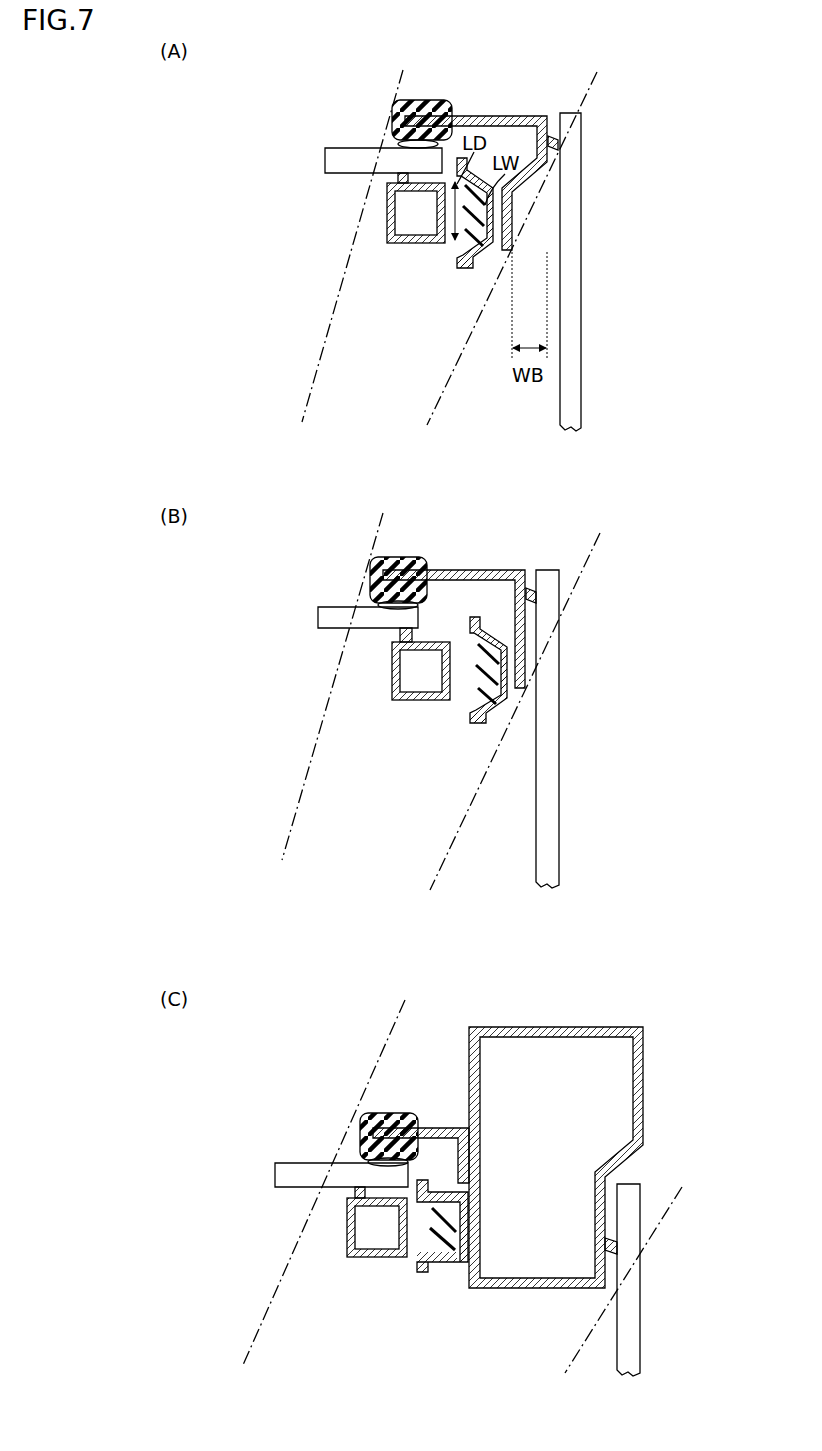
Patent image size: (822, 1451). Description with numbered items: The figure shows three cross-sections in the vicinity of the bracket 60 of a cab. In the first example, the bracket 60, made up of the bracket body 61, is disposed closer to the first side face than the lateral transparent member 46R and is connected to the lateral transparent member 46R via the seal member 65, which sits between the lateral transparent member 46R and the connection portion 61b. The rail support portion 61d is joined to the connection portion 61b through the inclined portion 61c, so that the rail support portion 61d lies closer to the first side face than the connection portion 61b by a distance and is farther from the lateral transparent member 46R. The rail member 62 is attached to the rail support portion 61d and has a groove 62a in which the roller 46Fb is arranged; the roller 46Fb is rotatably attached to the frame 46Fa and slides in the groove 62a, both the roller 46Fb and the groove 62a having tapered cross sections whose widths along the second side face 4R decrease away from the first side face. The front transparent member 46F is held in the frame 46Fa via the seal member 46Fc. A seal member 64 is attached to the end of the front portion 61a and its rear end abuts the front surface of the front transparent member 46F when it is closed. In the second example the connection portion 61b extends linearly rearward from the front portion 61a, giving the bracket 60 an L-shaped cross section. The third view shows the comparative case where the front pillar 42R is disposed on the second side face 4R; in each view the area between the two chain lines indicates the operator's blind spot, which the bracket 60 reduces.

In FIG. 7A, the bracket 60 is at (546, 146).
In FIG. 7B, the bracket 60 is at (546, 596).
In FIG. 7C, the bracket 60 is at (440, 1128).
In FIG. 7A, the bracket body 61 is at (546, 169).
In FIG. 7B, the bracket body 61 is at (546, 620).
In FIG. 7A, the front portion 61a is at (548, 116).
In FIG. 7B, the front portion 61a is at (525, 570).
In FIG. 7A, the connection portion 61b is at (540, 158).
In FIG. 7B, the connection portion 61b is at (518, 635).
In FIG. 7A, the inclined portion 61c is at (520, 180).
In FIG. 7A, the rail support portion 61d is at (573, 219).
In FIG. 7A, the rail member 62 is at (454, 230).
In FIG. 7B, the rail member 62 is at (432, 689).
In FIG. 7C, the rail member 62 is at (328, 1258).
In FIG. 7A, the groove of the rail member 62a is at (492, 244).
In FIG. 7B, the groove of the rail member 62a is at (505, 700).
In FIG. 7C, the groove of the rail member 62a is at (452, 1266).
In FIG. 7A, the seal member 64 is at (400, 130).
In FIG. 7B, the seal member 64 is at (378, 583).
In FIG. 7C, the seal member 64 is at (368, 1140).
In FIG. 7A, the seal member 65 is at (548, 143).
In FIG. 7B, the seal member 65 is at (528, 598).
In FIG. 7C, the seal member 65 is at (618, 1248).
In FIG. 7A, the front transparent member 46F is at (345, 168).
In FIG. 7B, the front transparent member 46F is at (340, 626).
In FIG. 7C, the front transparent member 46F is at (290, 1176).
In FIG. 7A, the frame 46Fa is at (387, 216).
In FIG. 7B, the frame 46Fa is at (392, 675).
In FIG. 7C, the frame 46Fa is at (347, 1232).
In FIG. 7A, the roller 46Fb is at (458, 254).
In FIG. 7B, the roller 46Fb is at (472, 710).
In FIG. 7C, the roller 46Fb is at (420, 1250).
In FIG. 7A, the seal member 46Fc is at (400, 178).
In FIG. 7B, the seal member 46Fc is at (403, 636).
In FIG. 7C, the seal member 46Fc is at (358, 1192).
In FIG. 7A, the lateral transparent member 46R is at (568, 333).
In FIG. 7B, the lateral transparent member 46R is at (548, 795).
In FIG. 7C, the lateral transparent member 46R is at (630, 1286).
In FIG. 7A, the second side face 4R is at (568, 393).
In FIG. 7B, the second side face 4R is at (548, 843).
In FIG. 7C, the second side face 4R is at (630, 1334).
In FIG. 7C, the front pillar 42R is at (563, 1030).